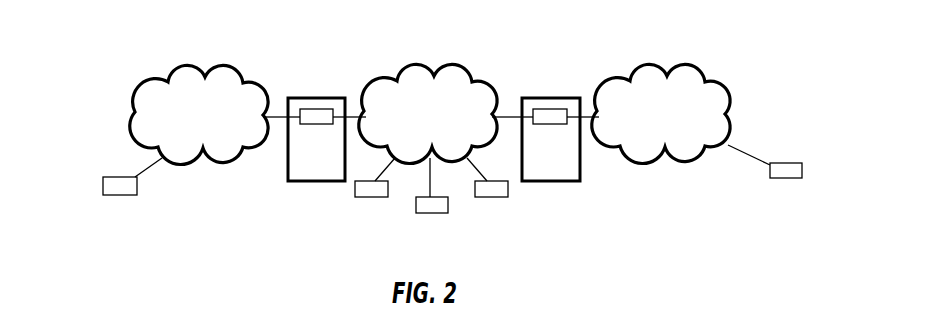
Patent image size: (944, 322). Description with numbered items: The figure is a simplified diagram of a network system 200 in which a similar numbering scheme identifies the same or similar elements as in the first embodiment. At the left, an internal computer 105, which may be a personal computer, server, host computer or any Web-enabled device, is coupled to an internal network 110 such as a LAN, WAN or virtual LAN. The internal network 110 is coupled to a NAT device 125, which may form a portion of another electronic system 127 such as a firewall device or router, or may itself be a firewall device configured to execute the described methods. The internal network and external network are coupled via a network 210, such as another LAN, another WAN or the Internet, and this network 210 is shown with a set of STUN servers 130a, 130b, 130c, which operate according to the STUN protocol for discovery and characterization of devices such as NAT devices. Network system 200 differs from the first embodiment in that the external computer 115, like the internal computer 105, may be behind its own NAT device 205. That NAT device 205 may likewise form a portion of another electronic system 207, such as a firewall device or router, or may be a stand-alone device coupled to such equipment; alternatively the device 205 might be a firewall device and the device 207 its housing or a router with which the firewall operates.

The internal computer 105 is at (104, 182).
The internal network 110 is at (182, 65).
The external computer 115 is at (803, 170).
The network address translation (NAT) device 125 is at (313, 124).
The electronic system 127 is at (318, 97).
The STUN server 130a is at (370, 197).
The STUN server 130b is at (430, 213).
The STUN server 130c is at (492, 197).
The network system 200 is at (752, 220).
The NAT device 205 is at (545, 124).
The electronic system 207 is at (552, 97).
The network 210 is at (458, 70).